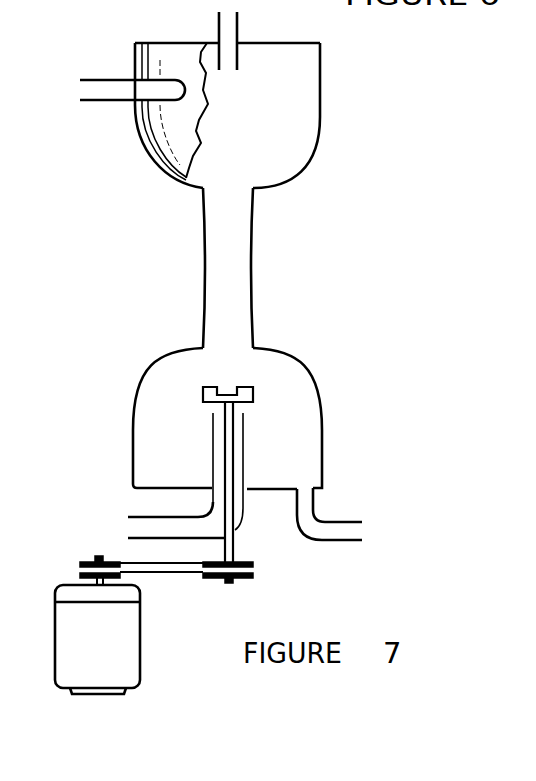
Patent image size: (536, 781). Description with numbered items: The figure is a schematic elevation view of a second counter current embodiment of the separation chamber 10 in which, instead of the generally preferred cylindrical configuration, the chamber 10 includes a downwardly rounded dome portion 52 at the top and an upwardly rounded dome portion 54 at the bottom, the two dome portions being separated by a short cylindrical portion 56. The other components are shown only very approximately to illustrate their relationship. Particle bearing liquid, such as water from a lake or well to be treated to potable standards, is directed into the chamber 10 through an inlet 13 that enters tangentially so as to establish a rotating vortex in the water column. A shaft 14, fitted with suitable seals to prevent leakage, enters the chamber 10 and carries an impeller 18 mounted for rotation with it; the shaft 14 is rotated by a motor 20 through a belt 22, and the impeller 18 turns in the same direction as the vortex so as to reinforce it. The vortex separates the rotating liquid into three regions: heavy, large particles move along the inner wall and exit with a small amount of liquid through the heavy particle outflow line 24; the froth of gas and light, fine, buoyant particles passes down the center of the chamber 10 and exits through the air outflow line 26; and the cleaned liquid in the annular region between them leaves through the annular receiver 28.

The chamber 10 is at (285, 212).
The inlet 13 is at (113, 78).
The shaft 14 is at (229, 548).
The impeller 18 is at (247, 386).
The motor 20 is at (55, 637).
The belt 22 is at (173, 573).
The heavy particle outflow line 24 is at (347, 520).
The air outflow line 26 is at (238, 27).
The annular receiver 28 is at (145, 515).
The downwardly rounded dome portion 52 is at (160, 172).
The upwardly rounded dome portion 54 is at (313, 392).
The short cylindrical portion 56 is at (253, 310).